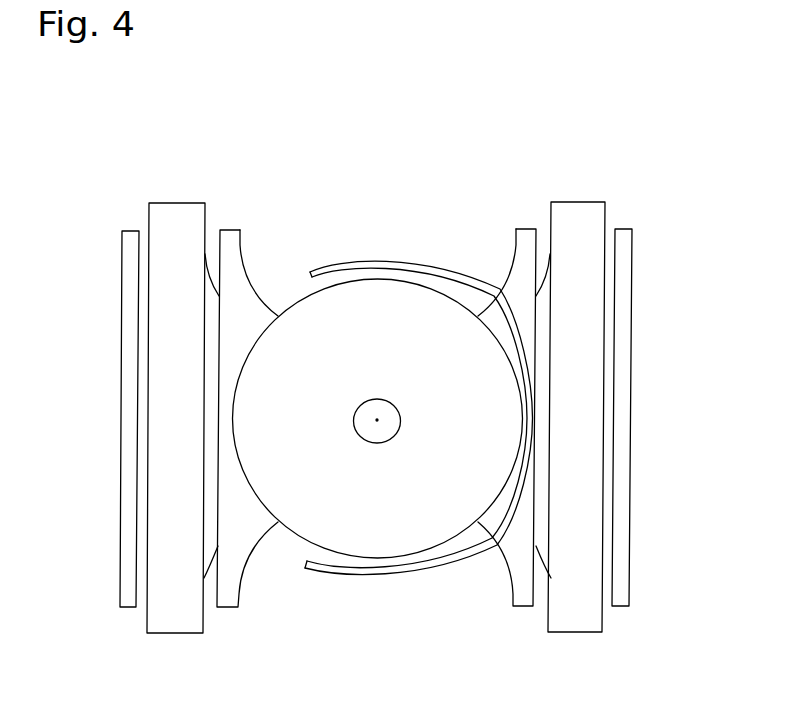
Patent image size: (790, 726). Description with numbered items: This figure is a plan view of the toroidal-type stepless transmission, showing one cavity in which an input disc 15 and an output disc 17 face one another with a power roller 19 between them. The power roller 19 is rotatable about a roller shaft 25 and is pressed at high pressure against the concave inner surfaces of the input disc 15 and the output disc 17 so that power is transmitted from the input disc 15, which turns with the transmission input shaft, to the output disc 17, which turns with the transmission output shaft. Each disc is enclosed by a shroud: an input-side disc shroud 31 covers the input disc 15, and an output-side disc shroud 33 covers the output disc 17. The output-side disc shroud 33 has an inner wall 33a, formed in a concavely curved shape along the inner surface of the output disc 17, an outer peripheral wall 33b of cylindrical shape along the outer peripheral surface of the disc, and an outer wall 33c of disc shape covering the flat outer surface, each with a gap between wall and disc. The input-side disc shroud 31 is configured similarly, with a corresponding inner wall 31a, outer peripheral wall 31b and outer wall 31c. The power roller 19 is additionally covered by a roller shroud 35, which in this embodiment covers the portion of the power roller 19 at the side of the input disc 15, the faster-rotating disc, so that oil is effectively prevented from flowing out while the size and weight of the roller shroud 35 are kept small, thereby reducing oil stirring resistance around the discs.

The input disc 15 is at (546, 574).
The output disc 17 is at (208, 573).
The power roller 19 is at (293, 537).
The roller shaft 25 is at (377, 427).
The input-side disc shroud 31 is at (563, 188).
The inner wall 31a is at (520, 228).
The outer peripheral wall 31b is at (583, 202).
The outer wall 31c is at (625, 228).
The output-side disc shroud 33 is at (193, 185).
The inner wall 33a is at (233, 229).
The outer peripheral wall 33b is at (168, 202).
The outer wall 33c is at (121, 407).
The roller shroud 35 is at (373, 257).